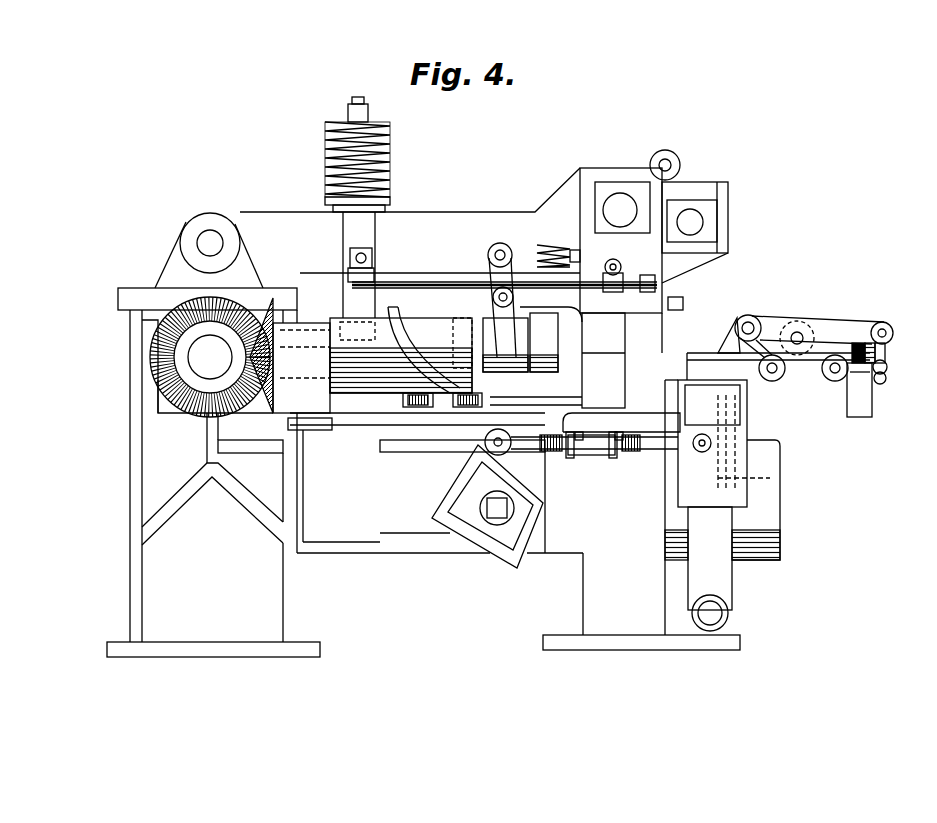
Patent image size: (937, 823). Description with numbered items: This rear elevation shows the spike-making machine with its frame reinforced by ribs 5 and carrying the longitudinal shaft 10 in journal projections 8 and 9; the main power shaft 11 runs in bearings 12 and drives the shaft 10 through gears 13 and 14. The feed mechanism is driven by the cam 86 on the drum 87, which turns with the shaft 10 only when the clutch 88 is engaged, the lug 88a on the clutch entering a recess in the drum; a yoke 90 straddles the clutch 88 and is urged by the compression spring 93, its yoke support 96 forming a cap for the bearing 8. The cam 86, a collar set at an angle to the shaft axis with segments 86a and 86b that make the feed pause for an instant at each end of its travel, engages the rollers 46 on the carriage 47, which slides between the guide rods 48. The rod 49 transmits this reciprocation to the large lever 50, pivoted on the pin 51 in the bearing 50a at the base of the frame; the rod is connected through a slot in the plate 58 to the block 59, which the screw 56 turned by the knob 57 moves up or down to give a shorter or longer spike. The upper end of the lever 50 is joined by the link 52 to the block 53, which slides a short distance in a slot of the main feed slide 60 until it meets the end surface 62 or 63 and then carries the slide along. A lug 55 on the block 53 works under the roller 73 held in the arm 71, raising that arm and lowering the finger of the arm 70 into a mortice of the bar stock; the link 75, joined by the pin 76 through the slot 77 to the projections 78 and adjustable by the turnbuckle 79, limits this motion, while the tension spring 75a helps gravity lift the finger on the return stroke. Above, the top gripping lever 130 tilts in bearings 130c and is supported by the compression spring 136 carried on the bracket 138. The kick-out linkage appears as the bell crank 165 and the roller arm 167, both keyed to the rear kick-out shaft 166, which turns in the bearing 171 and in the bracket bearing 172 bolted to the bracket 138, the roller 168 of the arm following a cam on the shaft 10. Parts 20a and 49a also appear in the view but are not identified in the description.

The re-enforcing ribs 5 is at (175, 508).
The projection 8 is at (578, 372).
The projection 9 is at (316, 416).
The longitudinal shaft 10 is at (621, 409).
The main power shaft 11 is at (210, 357).
The bearings 12 is at (170, 405).
The gear 13 is at (152, 345).
The gear 14 is at (262, 410).
The guide block 20a is at (700, 222).
The rollers 46 is at (440, 400).
The carriage 47 is at (395, 440).
The guide rods 48 is at (322, 432).
The rod 49 is at (642, 450).
The rod sleeve 49a is at (592, 446).
The large lever 50 is at (722, 568).
The bearing 50a is at (730, 612).
The pin 51 is at (705, 625).
The link 52 is at (835, 382).
The block 53 is at (840, 382).
The lug 55 is at (814, 328).
The screw 56 is at (755, 478).
The knob 57 is at (773, 382).
The plate 58 is at (678, 490).
The block 59 is at (760, 443).
The main feed slide 60 is at (872, 405).
The end surface 62 is at (712, 405).
The end surface 63 is at (860, 384).
The arm 70 is at (748, 345).
The arm 71 is at (822, 320).
The roller 73 is at (797, 332).
The link 75 is at (880, 325).
The tension spring 75a is at (868, 322).
The pin 76 is at (888, 367).
The slot 77 is at (887, 380).
The projections 78 is at (878, 356).
The turnbuckle 79 is at (888, 344).
The cam 86 is at (408, 360).
The segment 86a is at (393, 310).
The segment 86b is at (416, 400).
The drum 87 is at (345, 410).
The clutch 88 is at (470, 405).
The lug 88a is at (468, 330).
The yoke 90 is at (492, 270).
The compression spring 93 is at (497, 252).
The yoke support 96 is at (610, 308).
The top gripping lever 130 is at (540, 212).
The bearings 130c is at (620, 195).
The compression spring 136 is at (390, 162).
The bracket 138 is at (372, 225).
The bell crank 165 is at (550, 262).
The rear kick out shaft 166 is at (400, 282).
The roller arm 167 is at (645, 275).
The roller 168 is at (683, 303).
The bearing 171 is at (610, 262).
The bracket bearing 172 is at (350, 262).